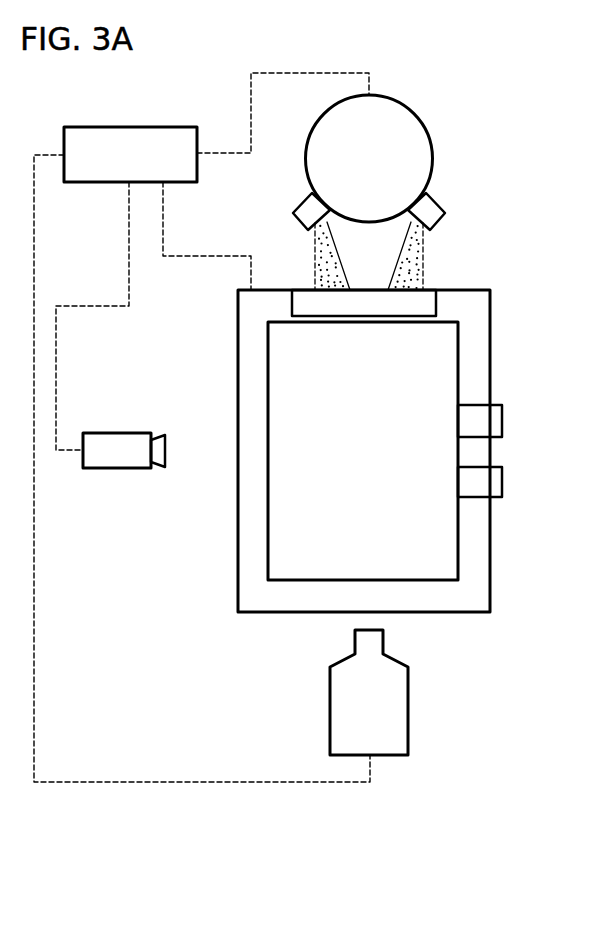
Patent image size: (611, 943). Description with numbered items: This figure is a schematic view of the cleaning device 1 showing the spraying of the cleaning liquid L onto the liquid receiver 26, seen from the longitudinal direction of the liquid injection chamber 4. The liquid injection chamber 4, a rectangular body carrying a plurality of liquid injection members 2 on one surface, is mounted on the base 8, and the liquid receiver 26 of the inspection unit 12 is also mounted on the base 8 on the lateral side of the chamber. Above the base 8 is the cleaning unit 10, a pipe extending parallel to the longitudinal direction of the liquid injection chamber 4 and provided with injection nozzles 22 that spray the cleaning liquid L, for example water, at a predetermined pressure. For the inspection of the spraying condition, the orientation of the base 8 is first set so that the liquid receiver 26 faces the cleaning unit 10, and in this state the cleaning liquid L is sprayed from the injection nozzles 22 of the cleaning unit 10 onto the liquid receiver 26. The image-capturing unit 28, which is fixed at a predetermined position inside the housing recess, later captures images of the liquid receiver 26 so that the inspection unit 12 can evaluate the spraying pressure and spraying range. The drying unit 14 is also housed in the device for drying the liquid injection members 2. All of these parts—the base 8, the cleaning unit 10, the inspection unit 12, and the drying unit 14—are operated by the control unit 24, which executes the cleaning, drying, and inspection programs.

The cleaning device 1 is at (261, 845).
The liquid injection member 2 is at (502, 422).
The liquid injection chamber 4 is at (467, 588).
The base 8 is at (490, 313).
The cleaning unit 10 is at (421, 99).
The inspection unit 12 is at (163, 508).
The drying unit 14 is at (409, 708).
The injection nozzle 22 is at (306, 199).
The control unit 24 is at (100, 127).
The liquid receiver 26 is at (292, 302).
The image-capturing unit 28 is at (121, 433).
The cleaning liquid L is at (316, 270).